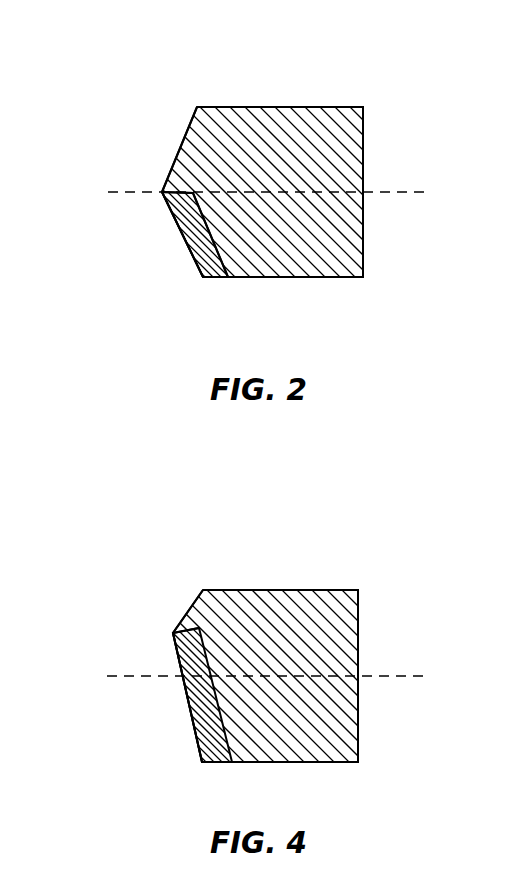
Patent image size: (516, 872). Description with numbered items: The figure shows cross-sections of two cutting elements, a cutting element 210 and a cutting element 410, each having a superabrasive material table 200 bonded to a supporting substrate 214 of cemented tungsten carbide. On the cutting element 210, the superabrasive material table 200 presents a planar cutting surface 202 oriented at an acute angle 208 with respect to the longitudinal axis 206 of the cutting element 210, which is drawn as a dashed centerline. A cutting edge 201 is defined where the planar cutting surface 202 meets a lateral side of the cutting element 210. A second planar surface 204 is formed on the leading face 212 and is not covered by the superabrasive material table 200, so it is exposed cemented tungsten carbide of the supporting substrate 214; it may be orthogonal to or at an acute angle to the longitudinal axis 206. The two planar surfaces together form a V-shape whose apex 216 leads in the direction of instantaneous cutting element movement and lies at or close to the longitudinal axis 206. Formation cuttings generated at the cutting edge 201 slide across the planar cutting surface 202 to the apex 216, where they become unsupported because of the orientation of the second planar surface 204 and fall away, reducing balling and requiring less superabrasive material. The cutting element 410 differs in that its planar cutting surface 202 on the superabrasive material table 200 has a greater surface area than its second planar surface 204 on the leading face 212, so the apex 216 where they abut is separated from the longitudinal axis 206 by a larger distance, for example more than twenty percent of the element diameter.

In FIG. 2, the superabrasive material table 200 is at (197, 243).
In FIG. 4, the superabrasive material table 200 is at (197, 687).
In FIG. 2, the cutting edge 201 is at (202, 292).
In FIG. 2, the planar cutting surface 202 is at (195, 258).
In FIG. 4, the planar cutting surface 202 is at (193, 723).
In FIG. 2, the second planar surface 204 is at (179, 150).
In FIG. 4, the second planar surface 204 is at (191, 607).
In FIG. 2, the longitudinal axis 206 is at (405, 192).
In FIG. 4, the longitudinal axis 206 is at (392, 677).
In FIG. 2, the acute angle 208 is at (218, 204).
In FIG. 2, the cutting element 210 is at (397, 96).
In FIG. 2, the leading face 212 is at (130, 142).
In FIG. 4, the leading face 212 is at (147, 653).
In FIG. 2, the supporting substrate 214 is at (264, 120).
In FIG. 4, the supporting substrate 214 is at (275, 603).
In FIG. 2, the apex 216 is at (160, 191).
In FIG. 4, the apex 216 is at (172, 631).
In FIG. 4, the cutting element 410 is at (409, 577).